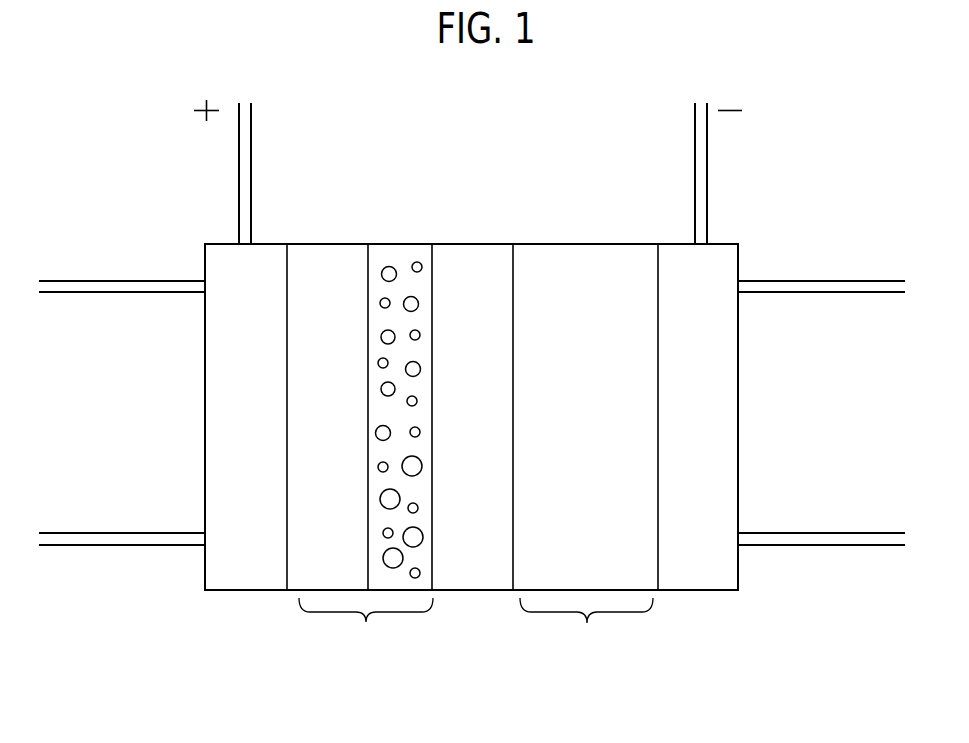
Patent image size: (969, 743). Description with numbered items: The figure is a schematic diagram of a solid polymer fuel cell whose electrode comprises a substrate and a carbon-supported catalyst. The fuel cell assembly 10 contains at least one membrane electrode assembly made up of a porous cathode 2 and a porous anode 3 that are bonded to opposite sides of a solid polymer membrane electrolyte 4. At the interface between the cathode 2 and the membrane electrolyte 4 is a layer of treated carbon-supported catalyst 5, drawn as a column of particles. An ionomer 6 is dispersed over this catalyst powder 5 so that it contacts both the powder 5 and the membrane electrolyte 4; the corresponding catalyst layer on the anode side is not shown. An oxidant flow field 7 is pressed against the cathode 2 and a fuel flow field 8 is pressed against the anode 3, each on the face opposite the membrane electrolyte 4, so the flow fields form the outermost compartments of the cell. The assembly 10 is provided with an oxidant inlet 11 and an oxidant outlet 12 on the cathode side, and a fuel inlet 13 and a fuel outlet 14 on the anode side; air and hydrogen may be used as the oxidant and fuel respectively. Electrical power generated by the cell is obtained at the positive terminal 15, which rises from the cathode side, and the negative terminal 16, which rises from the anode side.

The fuel cell assembly 10 is at (814, 150).
The positive terminal 15 is at (260, 152).
The negative terminal 16 is at (688, 150).
The oxidant inlet 11 is at (128, 275).
The oxidant outlet 12 is at (150, 523).
The fuel inlet 13 is at (817, 275).
The fuel outlet 14 is at (818, 528).
The ionomer 6 is at (398, 258).
The treated carbon-supported catalyst 5 is at (379, 551).
The oxidant flow field 7 is at (245, 568).
The fuel flow field 8 is at (700, 568).
The solid polymer membrane electrolyte 4 is at (473, 568).
The porous cathode 2 is at (366, 643).
The porous anode 3 is at (587, 645).